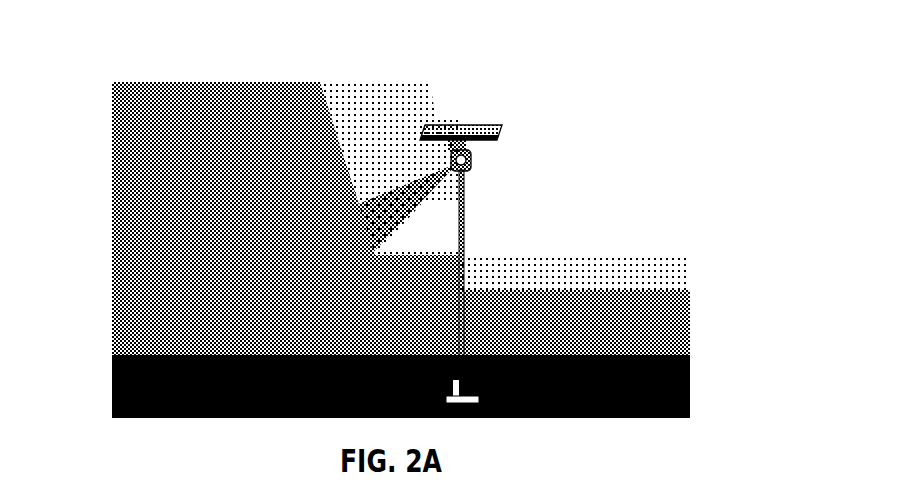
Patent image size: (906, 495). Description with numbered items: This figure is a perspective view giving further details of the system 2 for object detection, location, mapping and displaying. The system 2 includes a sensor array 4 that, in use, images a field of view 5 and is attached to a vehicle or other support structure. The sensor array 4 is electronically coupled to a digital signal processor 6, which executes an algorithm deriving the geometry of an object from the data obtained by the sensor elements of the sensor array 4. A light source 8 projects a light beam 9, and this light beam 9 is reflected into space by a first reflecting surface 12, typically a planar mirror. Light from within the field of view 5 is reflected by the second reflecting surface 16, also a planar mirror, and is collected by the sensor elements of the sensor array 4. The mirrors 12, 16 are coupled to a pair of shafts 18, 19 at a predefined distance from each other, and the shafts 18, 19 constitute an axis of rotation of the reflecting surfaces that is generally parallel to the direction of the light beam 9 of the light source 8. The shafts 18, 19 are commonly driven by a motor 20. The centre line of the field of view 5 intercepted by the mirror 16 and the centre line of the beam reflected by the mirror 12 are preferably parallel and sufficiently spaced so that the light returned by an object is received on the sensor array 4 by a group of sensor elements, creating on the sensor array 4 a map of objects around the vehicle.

The system 2 is at (580, 90).
The sensor array 4 is at (468, 146).
The field of view 5 is at (348, 213).
The digital signal processor 6 is at (452, 134).
The light source 8 is at (464, 388).
The light beam 9 is at (450, 400).
The first reflecting surface 12 is at (464, 368).
The second reflecting surface 16 is at (468, 158).
The shaft 18 is at (464, 270).
The shaft 19 is at (464, 352).
The motor 20 is at (464, 342).